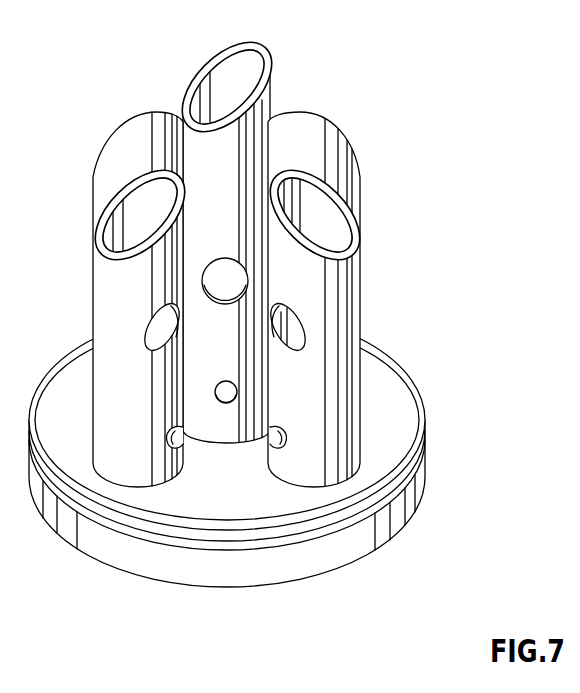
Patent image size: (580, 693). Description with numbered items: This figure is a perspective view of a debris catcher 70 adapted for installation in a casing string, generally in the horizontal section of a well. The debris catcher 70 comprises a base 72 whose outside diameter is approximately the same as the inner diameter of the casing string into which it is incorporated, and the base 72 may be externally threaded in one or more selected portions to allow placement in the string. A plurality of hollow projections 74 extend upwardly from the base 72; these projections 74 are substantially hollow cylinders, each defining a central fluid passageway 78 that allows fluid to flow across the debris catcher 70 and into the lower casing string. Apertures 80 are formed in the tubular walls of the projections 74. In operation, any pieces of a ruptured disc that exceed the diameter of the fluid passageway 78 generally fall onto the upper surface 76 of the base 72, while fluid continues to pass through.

The debris catcher 70 is at (256, 334).
The base 72 is at (413, 503).
The hollow projections 74 is at (200, 63).
The upper surface 76 is at (377, 380).
The central fluid passageway 78 is at (130, 230).
The apertures 80 is at (181, 329).